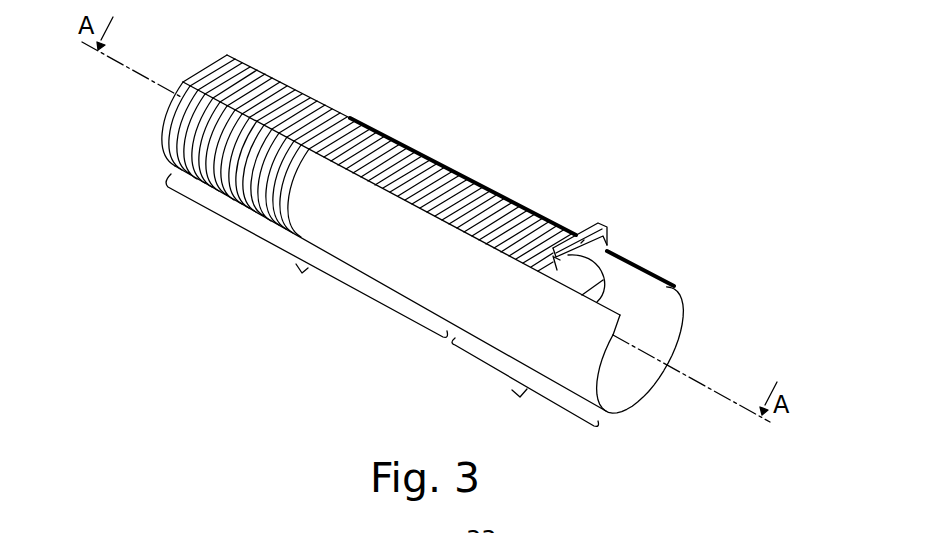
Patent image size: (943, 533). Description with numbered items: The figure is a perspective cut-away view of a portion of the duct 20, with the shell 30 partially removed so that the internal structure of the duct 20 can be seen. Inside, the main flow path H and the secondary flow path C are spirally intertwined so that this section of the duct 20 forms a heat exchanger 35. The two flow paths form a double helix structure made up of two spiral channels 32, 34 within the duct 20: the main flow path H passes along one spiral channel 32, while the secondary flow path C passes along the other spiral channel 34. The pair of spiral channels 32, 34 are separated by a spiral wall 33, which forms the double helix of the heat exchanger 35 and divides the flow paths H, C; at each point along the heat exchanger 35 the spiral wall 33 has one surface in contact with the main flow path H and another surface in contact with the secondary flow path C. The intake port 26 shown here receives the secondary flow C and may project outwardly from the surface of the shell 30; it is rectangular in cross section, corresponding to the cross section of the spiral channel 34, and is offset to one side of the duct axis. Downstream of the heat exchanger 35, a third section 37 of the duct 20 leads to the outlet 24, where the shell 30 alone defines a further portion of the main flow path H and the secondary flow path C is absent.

The duct 20 is at (293, 89).
The outlet 24 is at (683, 348).
The intake port 26 is at (608, 231).
The shell 30 is at (377, 260).
The spiral channel 32 is at (397, 144).
The spiral wall 33 is at (595, 248).
The spiral channel 34 is at (403, 146).
The heat exchanger 35 is at (306, 255).
The third section 37 is at (525, 383).
The main flow path H is at (581, 243).
The secondary flow path C is at (560, 260).